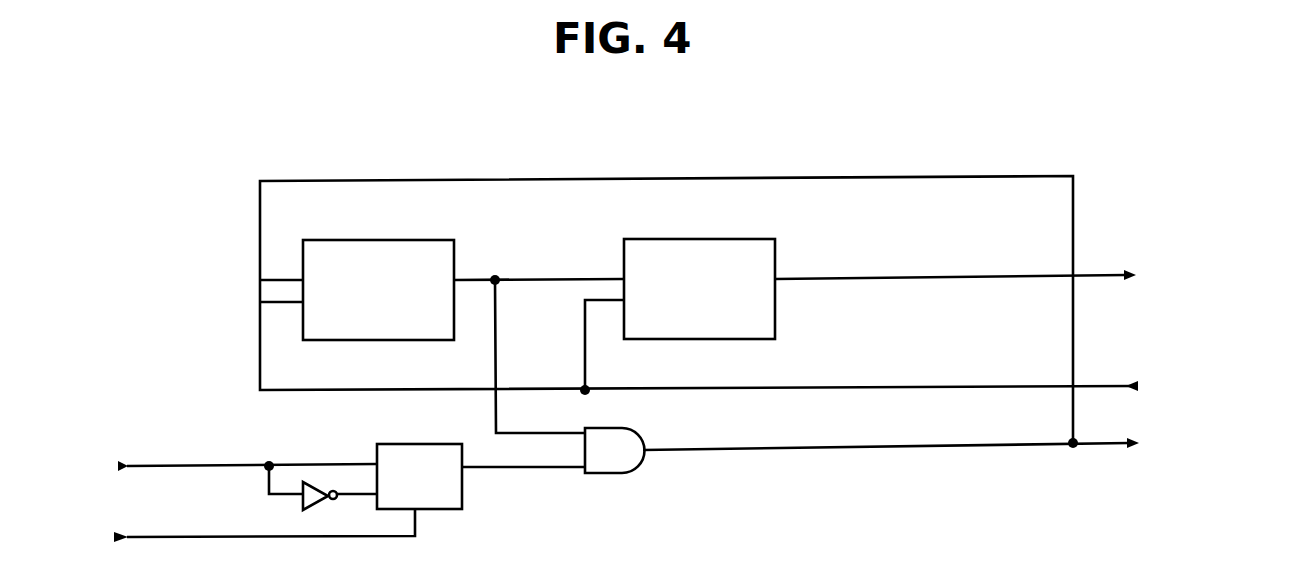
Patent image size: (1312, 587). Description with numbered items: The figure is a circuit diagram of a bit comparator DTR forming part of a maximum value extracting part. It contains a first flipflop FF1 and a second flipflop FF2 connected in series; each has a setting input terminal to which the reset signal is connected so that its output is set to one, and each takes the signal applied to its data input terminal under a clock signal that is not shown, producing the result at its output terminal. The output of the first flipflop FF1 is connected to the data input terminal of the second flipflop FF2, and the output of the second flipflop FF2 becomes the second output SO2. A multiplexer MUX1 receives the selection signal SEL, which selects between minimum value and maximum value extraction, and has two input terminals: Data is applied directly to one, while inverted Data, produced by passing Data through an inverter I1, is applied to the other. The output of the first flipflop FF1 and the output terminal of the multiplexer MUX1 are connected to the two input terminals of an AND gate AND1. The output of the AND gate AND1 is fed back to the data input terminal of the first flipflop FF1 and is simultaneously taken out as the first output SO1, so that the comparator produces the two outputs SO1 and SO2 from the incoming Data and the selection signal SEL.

The bit comparator DTR is at (967, 130).
The first flipflop FF1 is at (357, 290).
The second flipflop FF2 is at (614, 314).
The multiplexer MUX1 is at (419, 476).
The AND gate AND1 is at (557, 394).
The inverter I1 is at (323, 501).
The first output SO1 is at (916, 443).
The second output SO2 is at (982, 276).
The element Data is at (210, 465).
The selection signal SEL is at (231, 531).